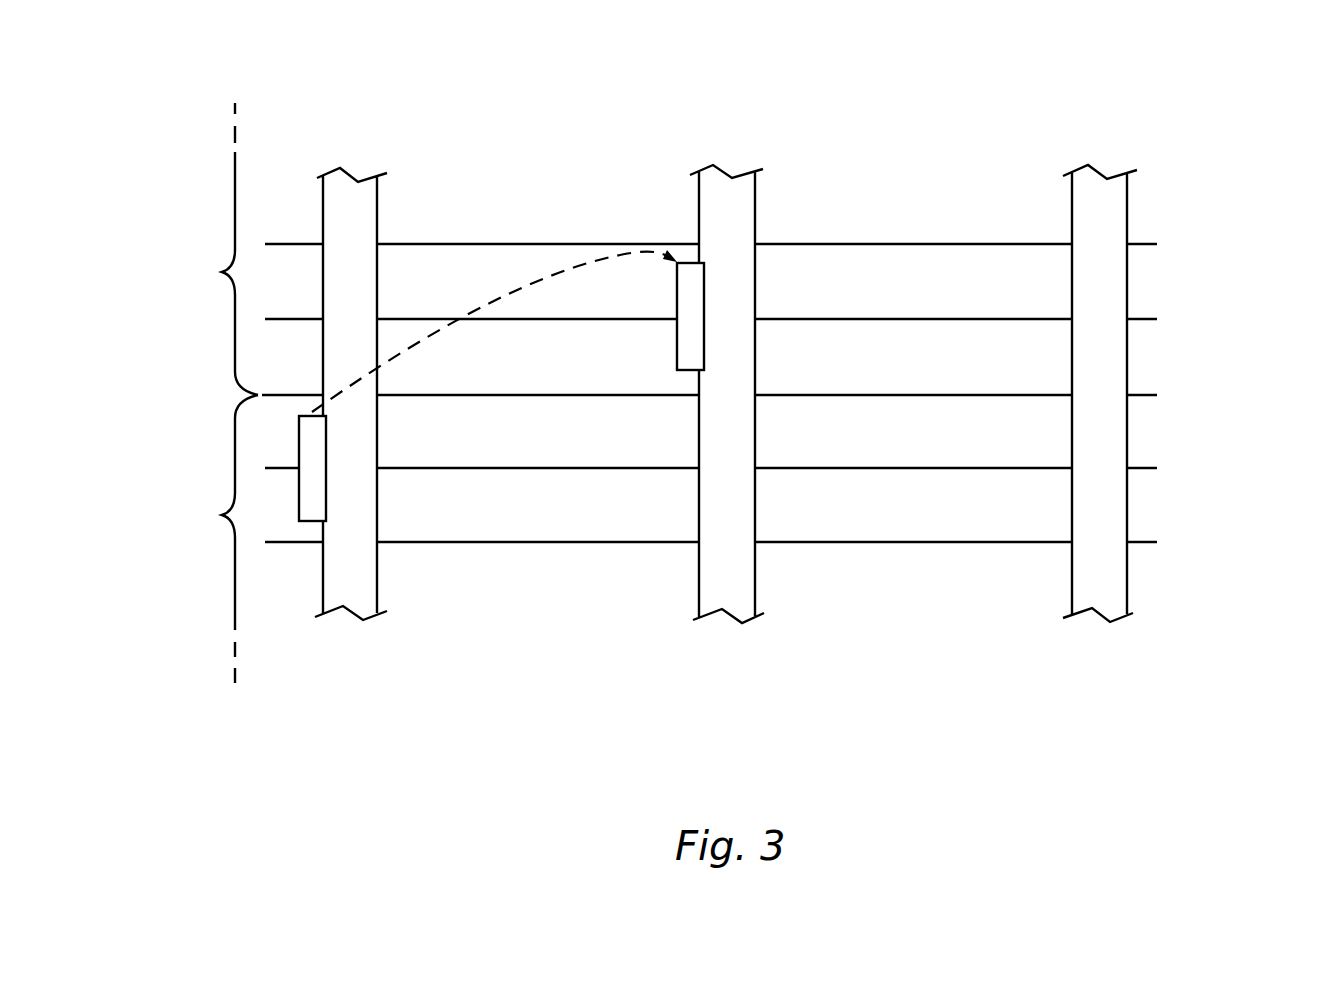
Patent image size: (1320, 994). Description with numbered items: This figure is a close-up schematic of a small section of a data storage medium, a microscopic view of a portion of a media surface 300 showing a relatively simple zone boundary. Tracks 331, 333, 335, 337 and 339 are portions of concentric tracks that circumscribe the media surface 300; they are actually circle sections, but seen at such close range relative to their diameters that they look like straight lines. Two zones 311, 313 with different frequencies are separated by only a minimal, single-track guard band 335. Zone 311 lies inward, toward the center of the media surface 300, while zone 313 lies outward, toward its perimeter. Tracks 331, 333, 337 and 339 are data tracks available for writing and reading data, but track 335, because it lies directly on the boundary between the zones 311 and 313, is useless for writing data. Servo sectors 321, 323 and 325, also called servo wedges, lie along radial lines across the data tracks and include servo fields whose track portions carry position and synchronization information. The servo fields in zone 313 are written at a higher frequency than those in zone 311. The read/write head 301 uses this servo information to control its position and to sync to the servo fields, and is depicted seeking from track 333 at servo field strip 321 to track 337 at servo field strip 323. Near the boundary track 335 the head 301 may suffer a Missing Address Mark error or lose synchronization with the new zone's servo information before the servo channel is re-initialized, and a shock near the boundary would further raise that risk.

The media surface 300 is at (1126, 99).
The read/write head 301 is at (302, 505).
The zone 311 is at (219, 539).
The zone 313 is at (219, 249).
The servo sector 321 is at (420, 640).
The servo sector 323 is at (660, 643).
The servo sector 325 is at (1033, 653).
The track 331 is at (1181, 542).
The track 333 is at (1181, 468).
The guard band track 335 is at (1181, 395).
The track 337 is at (1181, 319).
The track 339 is at (1181, 244).